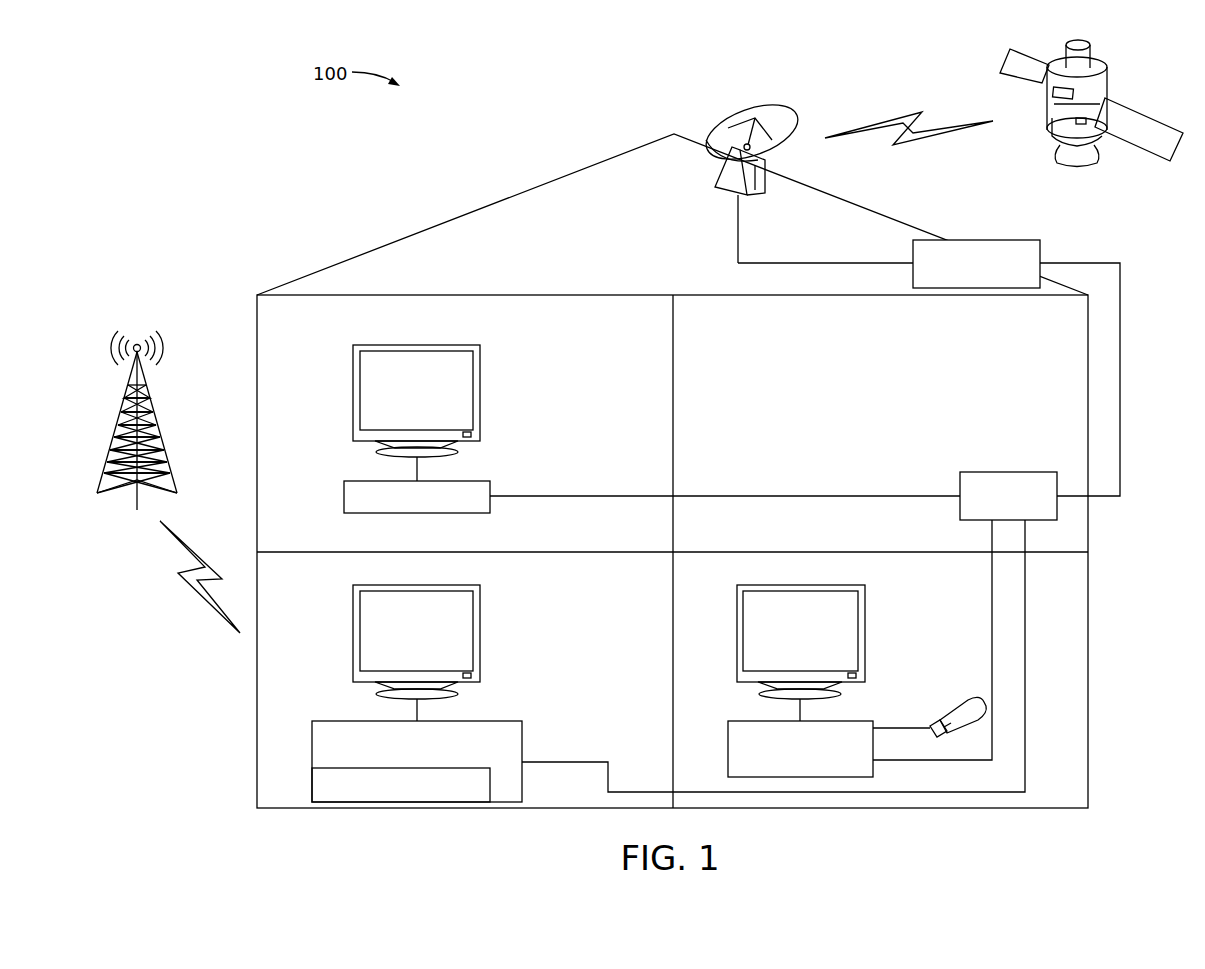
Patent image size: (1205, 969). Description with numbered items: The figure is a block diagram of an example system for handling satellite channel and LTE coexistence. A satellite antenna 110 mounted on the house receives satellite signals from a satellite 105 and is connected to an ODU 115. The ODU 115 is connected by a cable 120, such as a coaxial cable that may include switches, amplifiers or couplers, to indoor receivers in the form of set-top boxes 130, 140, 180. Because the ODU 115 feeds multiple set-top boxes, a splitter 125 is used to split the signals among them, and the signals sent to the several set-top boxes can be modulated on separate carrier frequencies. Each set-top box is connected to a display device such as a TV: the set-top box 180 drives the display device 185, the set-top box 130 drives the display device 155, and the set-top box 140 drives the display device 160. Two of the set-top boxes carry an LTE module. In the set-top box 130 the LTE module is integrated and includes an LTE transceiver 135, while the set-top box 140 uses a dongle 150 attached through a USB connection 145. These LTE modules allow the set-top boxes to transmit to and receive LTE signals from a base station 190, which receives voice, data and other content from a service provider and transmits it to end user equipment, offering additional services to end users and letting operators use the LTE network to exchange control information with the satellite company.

The satellite 105 is at (1162, 130).
The satellite antenna 110 is at (721, 110).
The ODU 115 is at (1035, 245).
The cable 120 is at (1122, 325).
The splitter 125 is at (1050, 478).
The set-top box 130 is at (320, 725).
The LTE transceiver 135 is at (318, 778).
The set-top box 140 is at (735, 725).
The USB connection 145 is at (906, 727).
The dongle 150 is at (962, 710).
The display device 155 is at (378, 592).
The display device 160 is at (763, 592).
The set-top box 180 is at (350, 488).
The display device 185 is at (378, 352).
The base station 190 is at (127, 332).